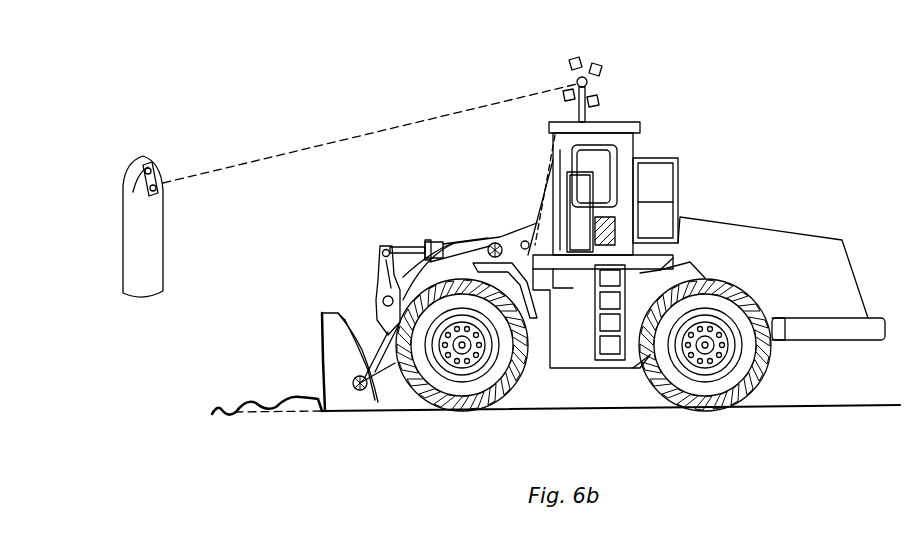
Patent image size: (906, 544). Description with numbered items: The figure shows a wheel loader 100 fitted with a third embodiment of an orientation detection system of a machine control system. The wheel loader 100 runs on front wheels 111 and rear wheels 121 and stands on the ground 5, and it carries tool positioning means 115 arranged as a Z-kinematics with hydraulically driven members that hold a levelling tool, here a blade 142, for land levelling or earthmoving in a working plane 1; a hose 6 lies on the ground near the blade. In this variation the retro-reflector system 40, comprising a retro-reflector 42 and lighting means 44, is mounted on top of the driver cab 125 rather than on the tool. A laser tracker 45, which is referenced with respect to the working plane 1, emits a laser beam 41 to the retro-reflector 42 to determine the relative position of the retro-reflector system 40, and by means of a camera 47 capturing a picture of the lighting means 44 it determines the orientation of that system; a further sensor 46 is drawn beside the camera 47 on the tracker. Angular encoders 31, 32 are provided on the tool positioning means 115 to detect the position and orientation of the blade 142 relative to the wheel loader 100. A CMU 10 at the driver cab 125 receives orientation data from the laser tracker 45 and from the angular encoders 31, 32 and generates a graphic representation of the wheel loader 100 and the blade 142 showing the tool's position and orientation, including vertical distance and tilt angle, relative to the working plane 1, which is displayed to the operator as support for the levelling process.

The working plane 1 is at (258, 416).
The ground 5 is at (590, 411).
The hose 6 is at (292, 398).
The CMU 10 is at (605, 230).
The angular encoder 31 is at (356, 392).
The angular encoder 32 is at (495, 243).
The retro-reflector system 40 is at (580, 70).
The laser beam 41 is at (214, 168).
The retro-reflector 42 is at (584, 78).
The lighting means 44 is at (604, 74).
The laser tracker 45 is at (116, 160).
The receiver 46 is at (150, 191).
The camera 47 is at (146, 172).
The wheel loader 100 is at (542, 265).
The front wheels 111 is at (447, 377).
The tool positioning means 115 is at (427, 226).
The rear wheels 121 is at (717, 375).
The driver cab 125 is at (585, 160).
The blade 142 is at (338, 358).